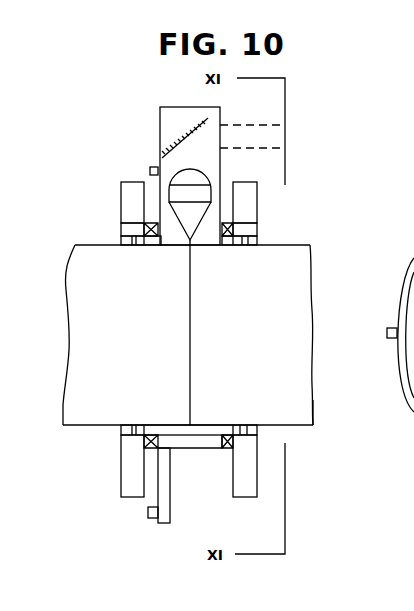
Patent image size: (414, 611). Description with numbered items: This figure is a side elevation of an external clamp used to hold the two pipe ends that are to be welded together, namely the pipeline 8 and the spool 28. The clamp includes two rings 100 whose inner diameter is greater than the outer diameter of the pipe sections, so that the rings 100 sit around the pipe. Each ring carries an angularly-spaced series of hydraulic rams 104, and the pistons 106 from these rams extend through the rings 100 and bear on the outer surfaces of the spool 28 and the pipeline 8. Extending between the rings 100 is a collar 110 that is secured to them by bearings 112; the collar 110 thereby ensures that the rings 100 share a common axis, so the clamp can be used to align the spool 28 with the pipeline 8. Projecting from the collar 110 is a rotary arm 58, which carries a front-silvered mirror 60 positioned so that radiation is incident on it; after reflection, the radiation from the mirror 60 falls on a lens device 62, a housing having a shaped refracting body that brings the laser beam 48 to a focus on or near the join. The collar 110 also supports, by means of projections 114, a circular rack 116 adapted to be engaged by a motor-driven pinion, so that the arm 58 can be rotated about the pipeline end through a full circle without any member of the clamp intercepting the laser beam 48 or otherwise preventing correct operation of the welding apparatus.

The pipeline 8 is at (78, 262).
The spool 28 is at (292, 400).
The laser beam 48 is at (240, 126).
The rotary arm 58 is at (158, 129).
The front-silvered mirror 60 is at (172, 138).
The lens device 62 is at (188, 193).
The rings 100 is at (138, 228).
The hydraulic rams 104 is at (248, 194).
The pistons 106 is at (245, 240).
The collar 110 is at (197, 440).
The bearings 112 is at (153, 225).
The projections 114 is at (163, 520).
The circular rack 116 is at (151, 167).